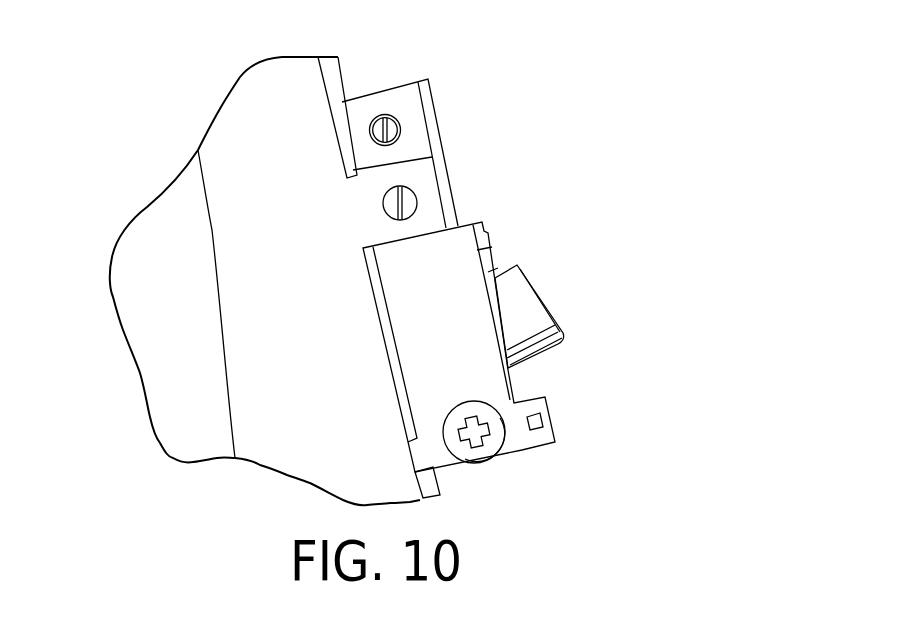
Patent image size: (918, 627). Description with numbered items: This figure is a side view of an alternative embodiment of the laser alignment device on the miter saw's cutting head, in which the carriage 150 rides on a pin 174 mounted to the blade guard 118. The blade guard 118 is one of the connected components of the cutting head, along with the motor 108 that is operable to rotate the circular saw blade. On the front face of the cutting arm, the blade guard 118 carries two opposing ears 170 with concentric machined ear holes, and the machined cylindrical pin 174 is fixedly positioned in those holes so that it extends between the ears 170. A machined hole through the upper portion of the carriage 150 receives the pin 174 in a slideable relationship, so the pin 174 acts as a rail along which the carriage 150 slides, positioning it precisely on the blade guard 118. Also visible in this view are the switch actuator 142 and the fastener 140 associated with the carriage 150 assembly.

The motor 108 is at (407, 457).
The blade guard 118 is at (293, 78).
The ears 170 is at (387, 177).
The pin 174 is at (408, 202).
The carriage 150 is at (450, 262).
The switch actuator 142 is at (522, 317).
The fastener 140 is at (535, 467).